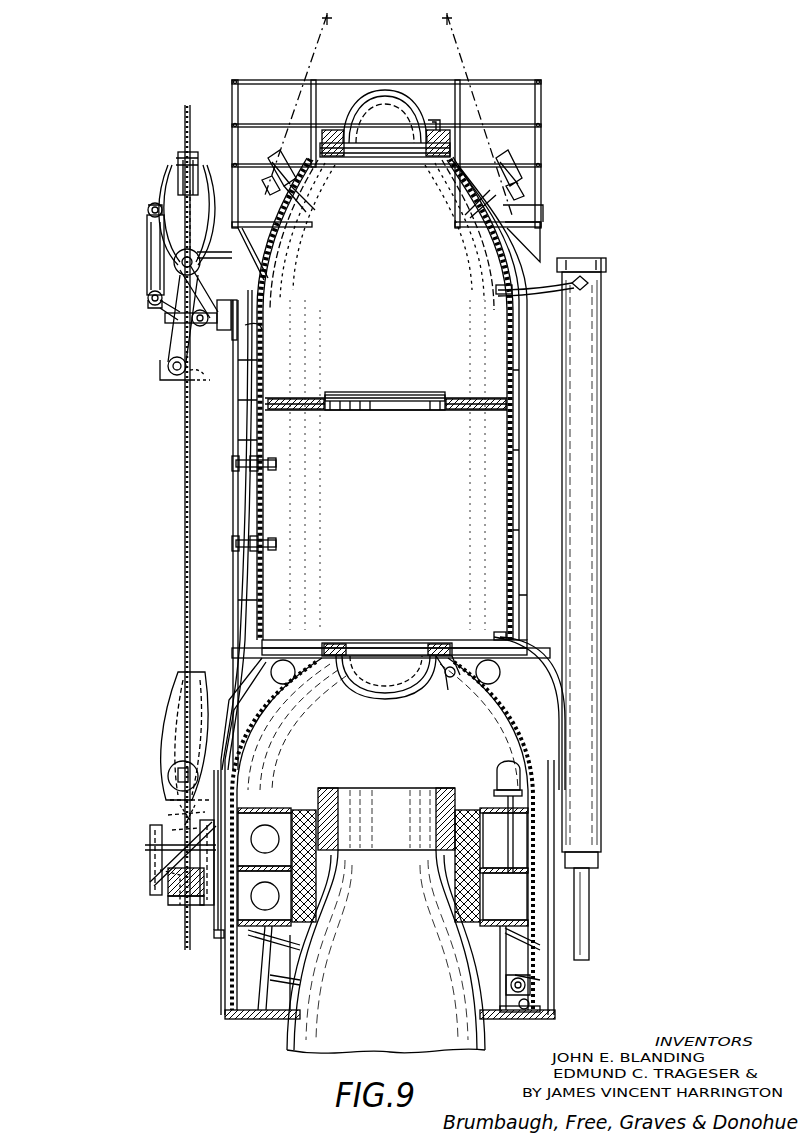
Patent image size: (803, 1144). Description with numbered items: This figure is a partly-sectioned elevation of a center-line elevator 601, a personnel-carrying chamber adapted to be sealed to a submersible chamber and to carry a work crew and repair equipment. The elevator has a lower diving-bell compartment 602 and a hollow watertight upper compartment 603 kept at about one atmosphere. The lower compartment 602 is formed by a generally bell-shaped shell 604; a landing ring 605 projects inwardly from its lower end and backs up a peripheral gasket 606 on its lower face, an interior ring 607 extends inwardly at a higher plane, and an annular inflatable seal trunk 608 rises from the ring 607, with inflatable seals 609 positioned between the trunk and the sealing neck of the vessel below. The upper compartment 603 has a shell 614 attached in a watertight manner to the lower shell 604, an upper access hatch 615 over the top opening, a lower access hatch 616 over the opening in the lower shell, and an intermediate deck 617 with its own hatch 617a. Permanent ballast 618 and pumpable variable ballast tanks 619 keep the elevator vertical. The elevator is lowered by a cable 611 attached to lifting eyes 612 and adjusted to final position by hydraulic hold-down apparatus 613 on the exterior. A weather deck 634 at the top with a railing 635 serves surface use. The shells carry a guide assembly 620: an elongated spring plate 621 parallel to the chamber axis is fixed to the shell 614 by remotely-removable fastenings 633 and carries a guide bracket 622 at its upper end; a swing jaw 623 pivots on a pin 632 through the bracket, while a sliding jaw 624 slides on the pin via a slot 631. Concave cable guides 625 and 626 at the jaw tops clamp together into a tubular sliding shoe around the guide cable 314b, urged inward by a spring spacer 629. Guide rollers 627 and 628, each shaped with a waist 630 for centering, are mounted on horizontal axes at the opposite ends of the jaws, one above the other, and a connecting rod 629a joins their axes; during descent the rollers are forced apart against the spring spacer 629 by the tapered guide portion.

The center-line elevator 601 is at (678, 451).
The lower diving-bell compartment 602 is at (410, 758).
The upper compartment 603 is at (408, 514).
The bell-shaped shell 604 is at (526, 985).
The landing ring 605 is at (530, 1006).
The peripheral gasket 606 is at (517, 1014).
The interior ring 607 is at (456, 954).
The annular inflatable seal trunk 608 is at (484, 815).
The inflatable seals 609 is at (452, 864).
The cable 611 is at (442, 18).
The lifting eyes 612 is at (273, 163).
The hydraulic hold-down apparatus 613 is at (600, 527).
The shell 614 is at (516, 478).
The upper access hatch 615 is at (385, 98).
The lower access hatch 616 is at (364, 692).
The intermediate deck 617 is at (487, 398).
The hatch 617a is at (392, 394).
The permanent ballast 618 is at (248, 988).
The variable ballast tanks 619 is at (256, 816).
The guide assembly 620 is at (137, 479).
The spring plate 621 is at (236, 404).
The guide bracket 622 is at (246, 273).
The swing jaw 623 is at (172, 183).
The sliding jaw 624 is at (165, 320).
The concave cable guide 625 is at (176, 158).
The concave cable guide 626 is at (197, 157).
The guide roller 627 is at (200, 380).
The guide roller 628 is at (238, 330).
The spring spacer 629 is at (148, 245).
The connecting rod 629a is at (170, 352).
The waist 630 is at (150, 880).
The slot 631 is at (162, 306).
The pin 632 is at (180, 266).
The fastenings 633 is at (272, 490).
The weather deck 634 is at (260, 220).
The railing 635 is at (282, 84).
The guide cable 314b is at (190, 106).